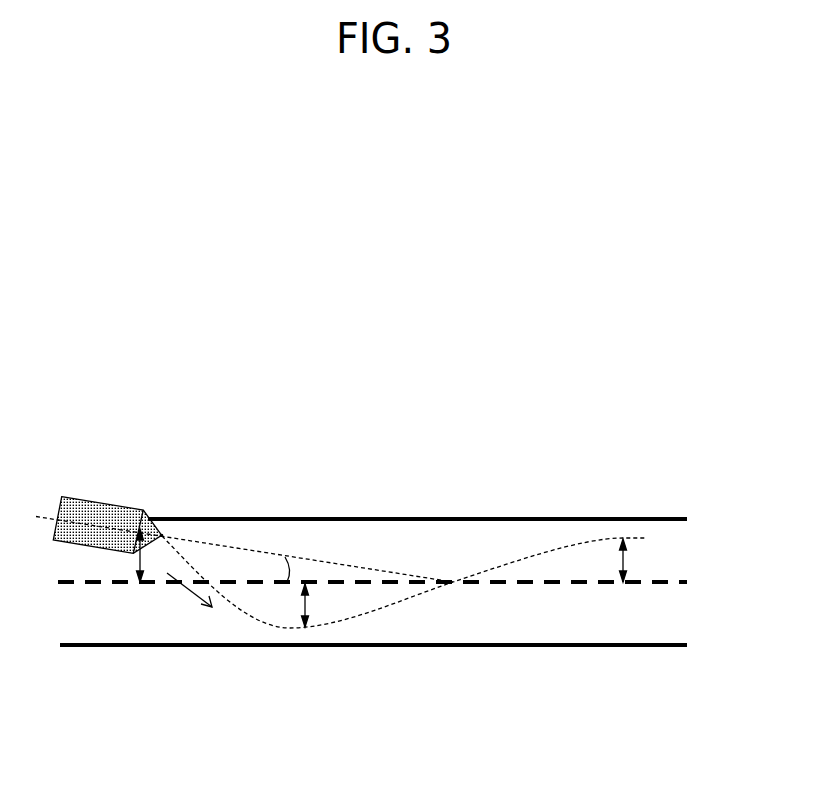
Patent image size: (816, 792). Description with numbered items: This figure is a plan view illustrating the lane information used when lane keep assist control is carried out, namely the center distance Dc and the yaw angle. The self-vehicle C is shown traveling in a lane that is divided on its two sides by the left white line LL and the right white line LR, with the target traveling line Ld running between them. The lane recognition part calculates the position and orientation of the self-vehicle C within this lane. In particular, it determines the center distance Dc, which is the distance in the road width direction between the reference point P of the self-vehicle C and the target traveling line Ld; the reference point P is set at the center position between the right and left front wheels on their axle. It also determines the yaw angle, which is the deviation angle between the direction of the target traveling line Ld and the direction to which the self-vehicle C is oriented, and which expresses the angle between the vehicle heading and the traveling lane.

The self-vehicle C is at (101, 497).
The reference point P is at (145, 510).
The left white line LL is at (657, 518).
The right white line LR is at (632, 648).
The target traveling line Ld is at (660, 580).
The center distance Dc is at (137, 562).